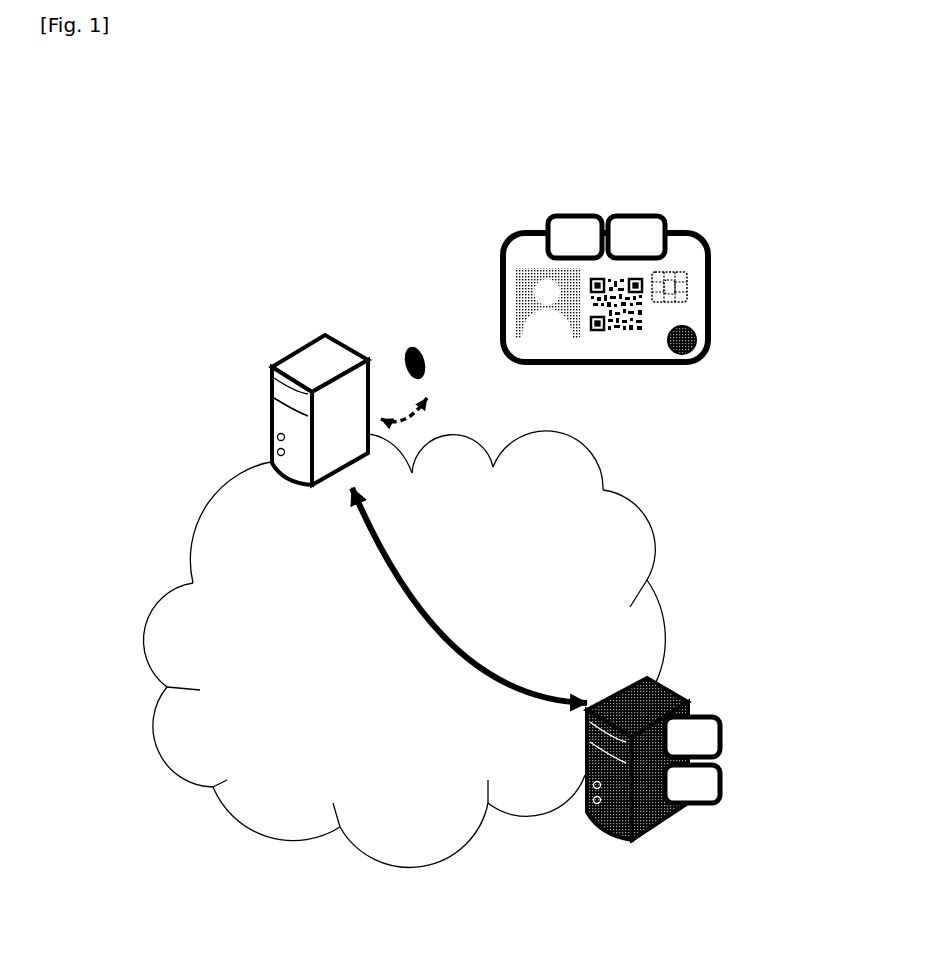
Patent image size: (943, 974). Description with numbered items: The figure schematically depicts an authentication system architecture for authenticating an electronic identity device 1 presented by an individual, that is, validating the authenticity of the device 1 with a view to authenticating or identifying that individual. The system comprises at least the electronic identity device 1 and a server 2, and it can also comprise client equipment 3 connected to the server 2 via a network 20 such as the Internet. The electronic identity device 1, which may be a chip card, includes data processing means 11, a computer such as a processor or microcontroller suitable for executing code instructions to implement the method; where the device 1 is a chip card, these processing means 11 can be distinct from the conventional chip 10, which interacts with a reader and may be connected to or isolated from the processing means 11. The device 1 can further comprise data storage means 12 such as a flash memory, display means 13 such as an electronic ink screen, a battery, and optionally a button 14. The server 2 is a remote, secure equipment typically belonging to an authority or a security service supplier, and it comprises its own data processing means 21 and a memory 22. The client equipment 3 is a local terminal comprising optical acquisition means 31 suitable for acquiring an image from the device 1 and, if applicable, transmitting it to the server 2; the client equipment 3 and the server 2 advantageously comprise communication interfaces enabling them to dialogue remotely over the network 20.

The electronic identity device 1 is at (608, 522).
The chip 10 is at (690, 290).
The data processing means 11 is at (638, 213).
The data storage means 12 is at (563, 213).
The display means 13 is at (627, 338).
The button 14 is at (700, 340).
The server 2 is at (665, 825).
The data processing means 21 is at (723, 785).
The memory 22 is at (723, 732).
The client equipment 3 is at (268, 367).
The optical acquisition means 31 is at (407, 342).
The network 20 is at (155, 587).